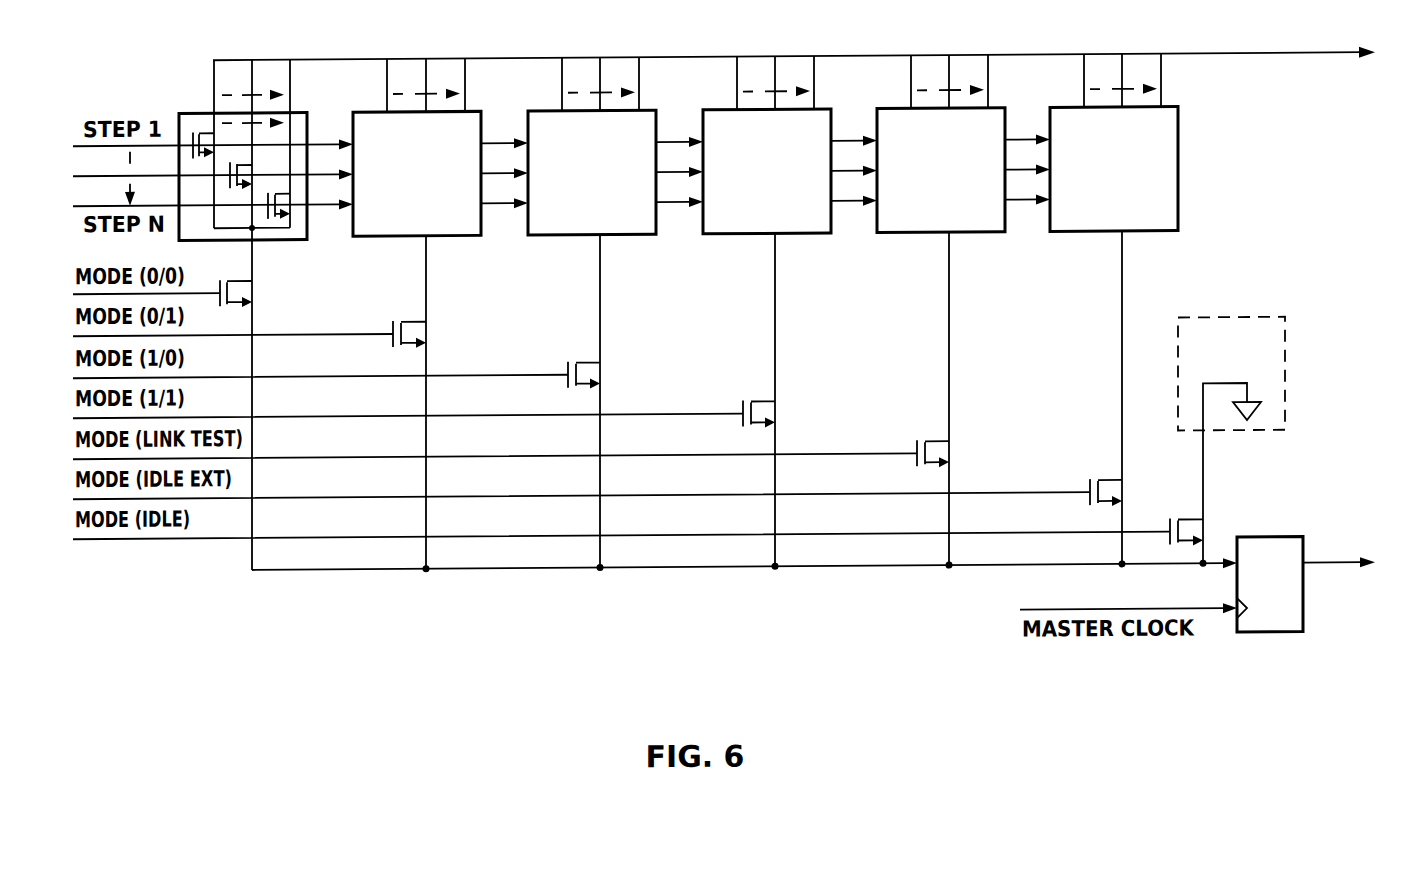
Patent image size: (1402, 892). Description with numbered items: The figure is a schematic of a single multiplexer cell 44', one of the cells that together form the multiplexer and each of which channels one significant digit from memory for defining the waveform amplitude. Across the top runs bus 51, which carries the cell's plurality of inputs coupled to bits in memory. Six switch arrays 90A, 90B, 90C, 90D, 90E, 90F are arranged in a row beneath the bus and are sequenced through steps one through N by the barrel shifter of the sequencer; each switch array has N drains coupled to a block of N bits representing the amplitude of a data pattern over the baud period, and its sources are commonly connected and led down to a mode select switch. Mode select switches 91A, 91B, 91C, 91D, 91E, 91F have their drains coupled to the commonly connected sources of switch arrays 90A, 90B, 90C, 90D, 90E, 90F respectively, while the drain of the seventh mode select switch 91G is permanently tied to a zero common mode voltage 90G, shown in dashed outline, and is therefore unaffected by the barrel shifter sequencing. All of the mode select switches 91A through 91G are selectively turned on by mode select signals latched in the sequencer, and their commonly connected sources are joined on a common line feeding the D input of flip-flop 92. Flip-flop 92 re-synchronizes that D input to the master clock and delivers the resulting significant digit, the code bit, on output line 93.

The bus 51 is at (1325, 63).
The switch array 90A is at (289, 241).
The switch array 90B is at (460, 237).
The switch array 90C is at (635, 237).
The switch array 90D is at (810, 237).
The switch array 90E is at (983, 237).
The switch array 90F is at (1157, 237).
The zero common mode voltage 90G is at (1260, 320).
The mode select switch 91A is at (256, 297).
The mode select switch 91B is at (429, 335).
The mode select switch 91C is at (603, 376).
The mode select switch 91D is at (778, 416).
The mode select switch 91E is at (952, 457).
The mode select switch 91F is at (1125, 499).
The mode select switch 91G is at (1207, 533).
The F/F 92 is at (1283, 543).
The line 93 is at (1327, 573).
The multiplexer cell 44' is at (441, 666).